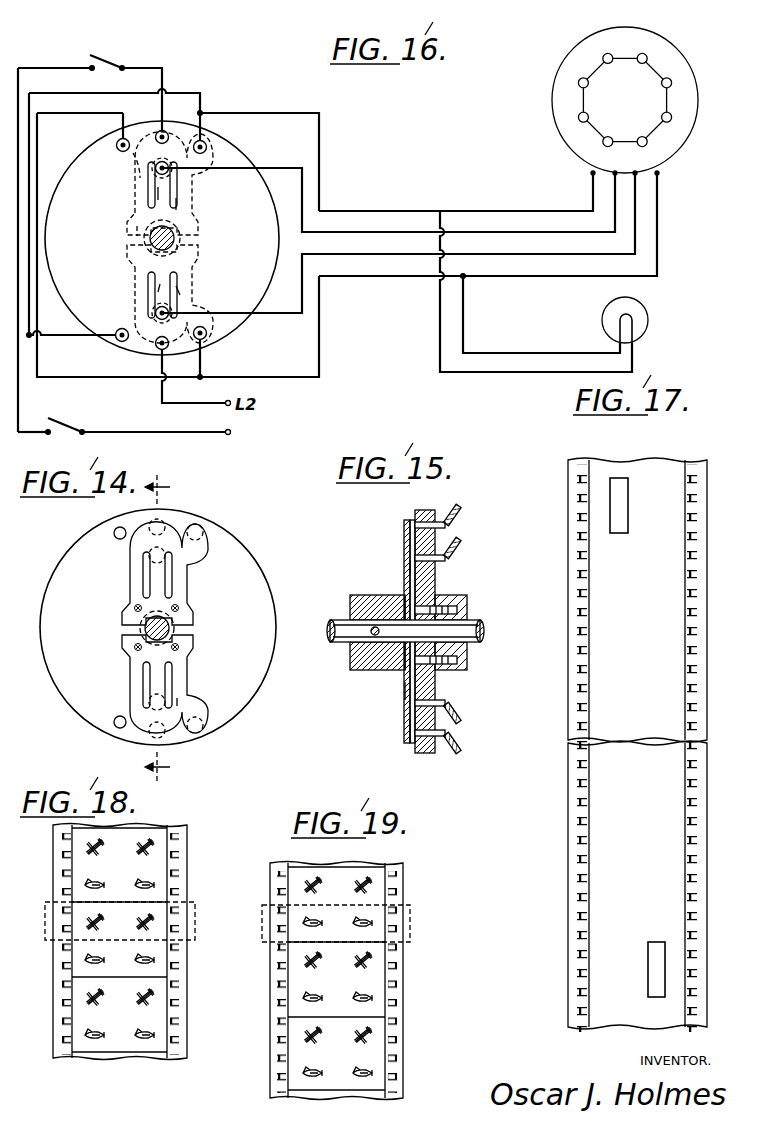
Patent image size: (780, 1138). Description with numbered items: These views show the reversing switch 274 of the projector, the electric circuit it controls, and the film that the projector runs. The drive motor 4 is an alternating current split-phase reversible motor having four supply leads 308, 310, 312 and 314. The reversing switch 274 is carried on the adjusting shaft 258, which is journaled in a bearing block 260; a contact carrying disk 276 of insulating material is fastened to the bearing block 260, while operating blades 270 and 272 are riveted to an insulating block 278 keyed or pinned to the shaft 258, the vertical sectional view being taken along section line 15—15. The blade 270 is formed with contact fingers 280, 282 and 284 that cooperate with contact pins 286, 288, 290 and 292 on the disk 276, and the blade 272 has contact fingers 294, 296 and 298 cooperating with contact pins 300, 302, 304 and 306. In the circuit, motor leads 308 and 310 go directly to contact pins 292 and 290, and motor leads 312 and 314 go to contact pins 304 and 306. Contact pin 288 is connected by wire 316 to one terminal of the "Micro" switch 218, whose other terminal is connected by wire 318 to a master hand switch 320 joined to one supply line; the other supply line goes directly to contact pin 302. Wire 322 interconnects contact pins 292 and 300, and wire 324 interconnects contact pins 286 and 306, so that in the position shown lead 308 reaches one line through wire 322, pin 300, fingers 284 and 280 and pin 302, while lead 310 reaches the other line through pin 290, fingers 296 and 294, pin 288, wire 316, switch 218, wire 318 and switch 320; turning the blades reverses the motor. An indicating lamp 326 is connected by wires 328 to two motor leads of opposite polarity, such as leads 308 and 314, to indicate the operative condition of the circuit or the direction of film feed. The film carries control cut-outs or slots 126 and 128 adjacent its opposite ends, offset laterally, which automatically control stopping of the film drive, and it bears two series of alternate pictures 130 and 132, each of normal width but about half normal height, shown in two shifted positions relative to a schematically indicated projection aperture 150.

In FIG. 16, the drive motor 4 is at (560, 107).
In FIG. 14, the section line 15 is at (167, 628).
In FIG. 17, the control cut-out 126 is at (617, 513).
In FIG. 17, the control cut-out 128 is at (660, 970).
In FIG. 18, the pictures 130 is at (157, 853).
In FIG. 19, the pictures 130 is at (373, 890).
In FIG. 18, the pictures 132 is at (160, 885).
In FIG. 19, the pictures 132 is at (375, 915).
In FIG. 18, the projection aperture region 150 is at (45, 935).
In FIG. 19, the projection aperture region 150 is at (410, 930).
In FIG. 16, the "Micro" switch 218 is at (105, 52).
In FIG. 15, the adjusting shaft 258 is at (341, 622).
In FIG. 15, the bearing block 260 is at (467, 603).
In FIG. 16, the operating blade 270 is at (197, 262).
In FIG. 14, the operating blade 270 is at (187, 618).
In FIG. 15, the operating blade 270 is at (405, 598).
In FIG. 16, the operating blade 272 is at (190, 221).
In FIG. 14, the operating blade 272 is at (137, 665).
In FIG. 15, the operating blade 272 is at (383, 670).
In FIG. 16, the reversing switch 274 is at (249, 153).
In FIG. 14, the reversing switch 274 is at (229, 520).
In FIG. 15, the reversing switch 274 is at (380, 530).
In FIG. 15, the contact carrying disk 276 is at (435, 585).
In FIG. 15, the insulating block 278 is at (350, 661).
In FIG. 16, the contact finger 280 is at (185, 295).
In FIG. 14, the contact finger 280 is at (135, 560).
In FIG. 15, the contact finger 280 is at (407, 528).
In FIG. 16, the contact finger 282 is at (160, 284).
In FIG. 14, the contact finger 282 is at (150, 573).
In FIG. 15, the contact finger 282 is at (410, 567).
In FIG. 16, the contact finger 284 is at (176, 286).
In FIG. 14, the contact finger 284 is at (180, 583).
In FIG. 16, the contact pin 286 is at (133, 153).
In FIG. 14, the contact pin 286 is at (114, 530).
In FIG. 16, the contact pin 288 is at (166, 130).
In FIG. 14, the contact pin 288 is at (168, 513).
In FIG. 15, the contact pin 288 is at (412, 528).
In FIG. 16, the contact pin 290 is at (170, 173).
In FIG. 14, the contact pin 290 is at (165, 558).
In FIG. 15, the contact pin 290 is at (440, 565).
In FIG. 16, the contact pin 292 is at (207, 142).
In FIG. 14, the contact pin 292 is at (203, 528).
In FIG. 16, the contact finger 294 is at (137, 226).
In FIG. 14, the contact finger 294 is at (137, 687).
In FIG. 16, the contact finger 296 is at (176, 198).
In FIG. 14, the contact finger 296 is at (155, 683).
In FIG. 15, the contact finger 296 is at (405, 682).
In FIG. 16, the contact finger 298 is at (158, 187).
In FIG. 14, the contact finger 298 is at (177, 698).
In FIG. 15, the contact finger 298 is at (413, 732).
In FIG. 16, the contact pin 300 is at (121, 329).
In FIG. 14, the contact pin 300 is at (113, 725).
In FIG. 16, the contact pin 302 is at (156, 348).
In FIG. 14, the contact pin 302 is at (143, 737).
In FIG. 15, the contact pin 302 is at (420, 742).
In FIG. 16, the contact pin 304 is at (172, 311).
In FIG. 14, the contact pin 304 is at (180, 745).
In FIG. 15, the contact pin 304 is at (443, 703).
In FIG. 16, the contact pin 306 is at (206, 338).
In FIG. 14, the contact pin 306 is at (203, 722).
In FIG. 16, the motor lead 308 is at (463, 211).
In FIG. 16, the motor lead 310 is at (490, 232).
In FIG. 16, the motor lead 312 is at (518, 254).
In FIG. 16, the motor lead 314 is at (560, 276).
In FIG. 16, the wire 316 is at (162, 68).
In FIG. 16, the wire 318 is at (19, 390).
In FIG. 16, the master hand switch 320 is at (70, 425).
In FIG. 16, the wire 322 is at (190, 93).
In FIG. 16, the wire 324 is at (37, 127).
In FIG. 16, the indicating lamp 326 is at (640, 303).
In FIG. 16, the wires 328 is at (491, 372).